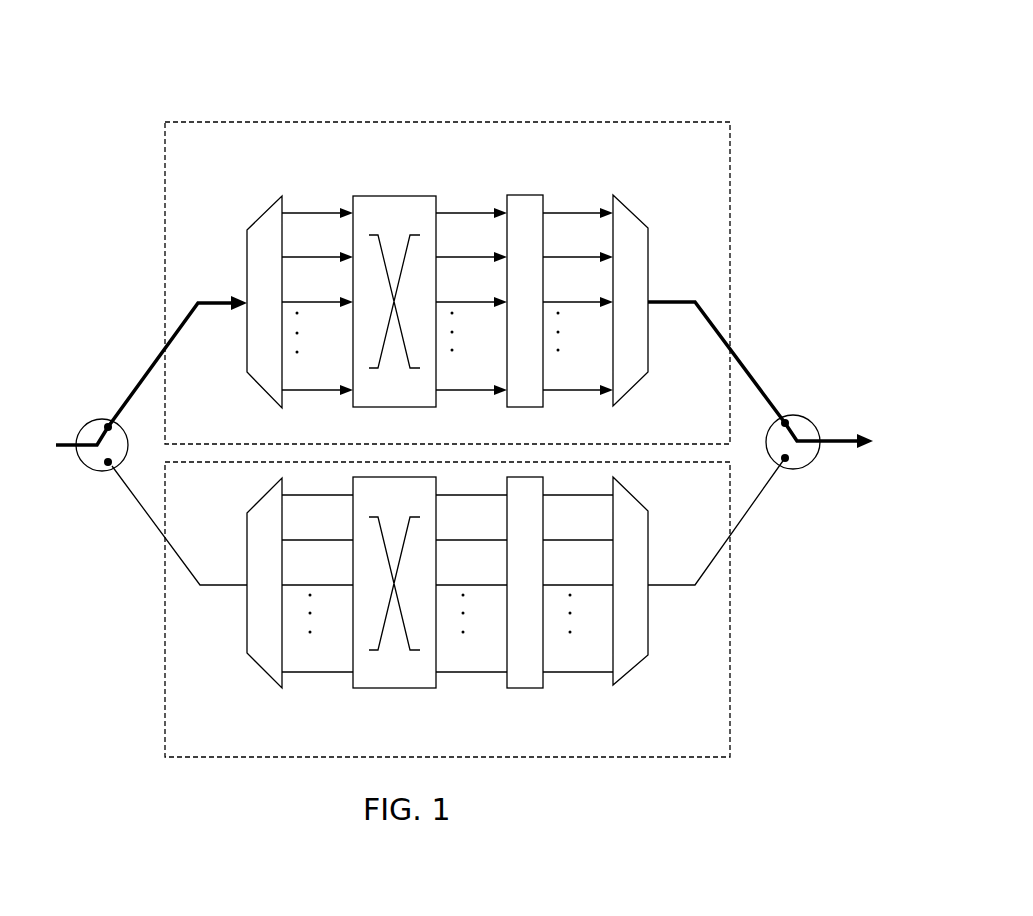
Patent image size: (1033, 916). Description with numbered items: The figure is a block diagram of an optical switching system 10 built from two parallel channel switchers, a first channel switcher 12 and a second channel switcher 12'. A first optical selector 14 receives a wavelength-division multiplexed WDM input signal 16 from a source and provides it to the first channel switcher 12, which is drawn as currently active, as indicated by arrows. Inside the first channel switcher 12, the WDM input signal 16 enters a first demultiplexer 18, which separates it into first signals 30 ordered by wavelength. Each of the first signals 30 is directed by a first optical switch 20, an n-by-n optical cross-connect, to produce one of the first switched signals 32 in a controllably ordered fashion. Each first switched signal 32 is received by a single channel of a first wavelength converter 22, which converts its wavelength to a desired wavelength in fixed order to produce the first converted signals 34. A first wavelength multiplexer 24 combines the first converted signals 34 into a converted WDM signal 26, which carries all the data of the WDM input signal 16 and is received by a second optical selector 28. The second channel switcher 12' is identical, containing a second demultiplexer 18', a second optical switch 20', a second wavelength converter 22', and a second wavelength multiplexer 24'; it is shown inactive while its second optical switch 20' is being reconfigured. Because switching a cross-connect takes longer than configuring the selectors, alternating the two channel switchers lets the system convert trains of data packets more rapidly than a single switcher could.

The optical switching system 10 is at (350, 33).
The first channel switcher 12 is at (447, 260).
The second channel switcher 12' is at (447, 633).
The first optical selector 14 is at (103, 418).
The WDM input signal 16 is at (170, 348).
The first demultiplexer 18 is at (238, 301).
The second demultiplexer 18' is at (238, 596).
The first optical switch 20 is at (405, 275).
The second optical switch 20' is at (406, 605).
The first wavelength converter 22 is at (515, 318).
The second wavelength converter 22' is at (554, 603).
The first wavelength multiplexer 24 is at (659, 300).
The second wavelength multiplexer 24' is at (651, 603).
The converted WDM signal 26 is at (722, 340).
The second optical selector 28 is at (795, 415).
The first signals 30 is at (327, 255).
The first switched signals 32 is at (475, 255).
The first converted signals 34 is at (588, 255).